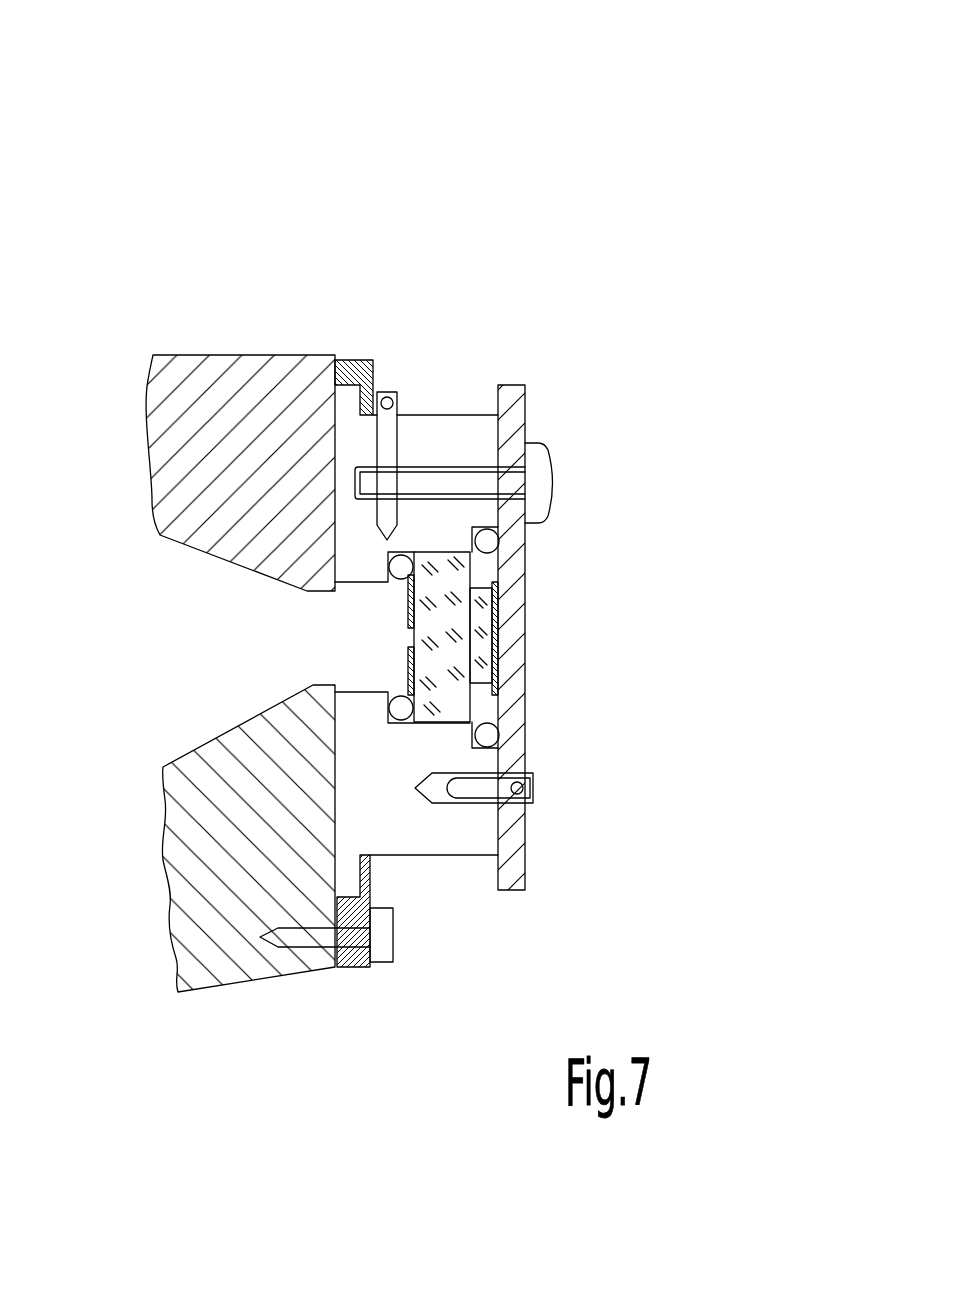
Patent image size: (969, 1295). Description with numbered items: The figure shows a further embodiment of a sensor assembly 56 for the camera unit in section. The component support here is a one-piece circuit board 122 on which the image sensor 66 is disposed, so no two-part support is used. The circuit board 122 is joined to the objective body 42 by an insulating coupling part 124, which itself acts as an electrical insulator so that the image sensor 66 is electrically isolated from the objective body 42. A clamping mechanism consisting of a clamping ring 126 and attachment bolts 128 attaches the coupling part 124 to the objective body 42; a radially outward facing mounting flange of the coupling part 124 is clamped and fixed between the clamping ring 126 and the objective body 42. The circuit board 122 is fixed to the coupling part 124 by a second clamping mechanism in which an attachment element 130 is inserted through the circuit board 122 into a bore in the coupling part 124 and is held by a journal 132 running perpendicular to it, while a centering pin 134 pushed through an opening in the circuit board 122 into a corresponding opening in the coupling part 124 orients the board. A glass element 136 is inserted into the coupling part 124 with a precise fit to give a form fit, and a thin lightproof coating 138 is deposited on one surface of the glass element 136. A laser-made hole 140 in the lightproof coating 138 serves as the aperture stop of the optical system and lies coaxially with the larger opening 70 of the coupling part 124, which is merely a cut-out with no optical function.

The objective body 42 is at (234, 390).
The sensor assembly 56 is at (303, 248).
The image sensor 66 is at (500, 673).
The opening 70 is at (373, 658).
The circuit board 122 is at (515, 395).
The insulating coupling part 124 is at (457, 835).
The clamping ring 126 is at (360, 360).
The attachment bolts 128 is at (383, 967).
The attachment element 130 is at (547, 477).
The journal 132 is at (396, 390).
The centering pin 134 is at (470, 788).
The glass element 136 is at (458, 652).
The lightproof coating 138 is at (408, 607).
The hole 140 is at (488, 542).